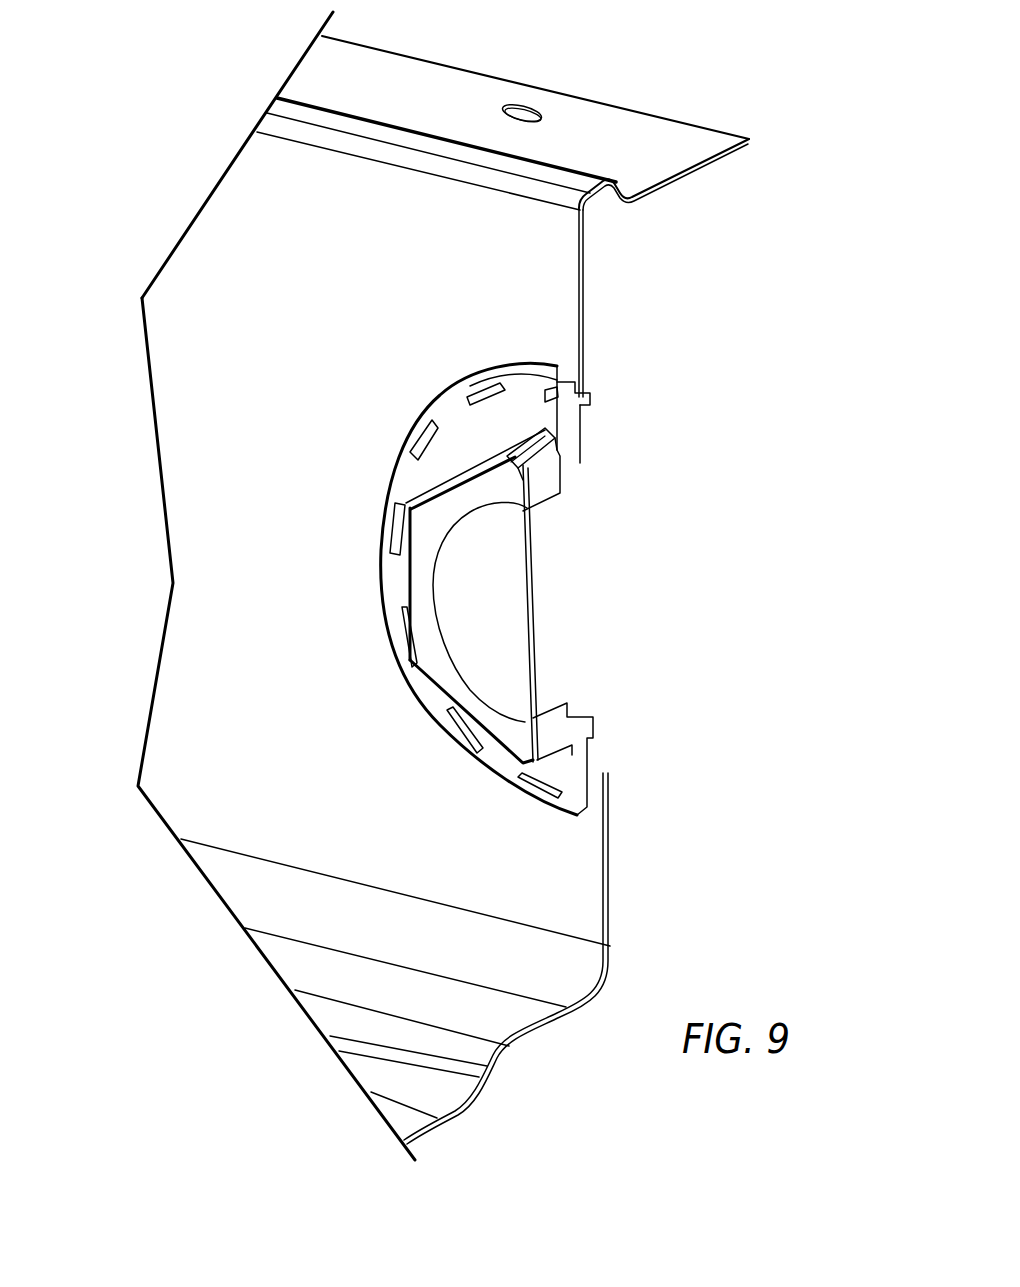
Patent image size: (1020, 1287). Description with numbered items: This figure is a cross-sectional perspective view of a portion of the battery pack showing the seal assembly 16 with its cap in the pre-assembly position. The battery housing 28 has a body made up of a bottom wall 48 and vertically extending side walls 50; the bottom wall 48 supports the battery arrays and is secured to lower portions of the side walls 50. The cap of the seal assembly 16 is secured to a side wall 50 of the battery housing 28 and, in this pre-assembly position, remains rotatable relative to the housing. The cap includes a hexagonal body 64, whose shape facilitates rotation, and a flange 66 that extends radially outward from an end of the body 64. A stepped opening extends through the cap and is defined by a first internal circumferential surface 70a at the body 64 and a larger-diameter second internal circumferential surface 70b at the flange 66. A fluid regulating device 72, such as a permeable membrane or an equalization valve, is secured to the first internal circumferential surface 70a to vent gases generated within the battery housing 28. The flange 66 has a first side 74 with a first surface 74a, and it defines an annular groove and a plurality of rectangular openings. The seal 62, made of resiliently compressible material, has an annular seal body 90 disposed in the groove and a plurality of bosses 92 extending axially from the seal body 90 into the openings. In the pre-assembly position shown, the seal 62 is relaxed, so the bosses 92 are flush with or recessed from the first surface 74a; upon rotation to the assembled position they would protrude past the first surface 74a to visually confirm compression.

The seal assembly 16 is at (620, 670).
The battery housing 28 is at (160, 160).
The bottom wall 48 is at (509, 1018).
The side wall 50 is at (210, 633).
The seal 62 is at (587, 396).
The body 64 is at (422, 562).
The flange 66 is at (424, 690).
The first internal circumferential surface 70a is at (550, 497).
The second internal circumferential surface 70b is at (577, 462).
The fluid regulating device 72 is at (502, 612).
The first side 74 is at (500, 765).
The first surface 74a is at (550, 413).
The annular seal body 90 is at (603, 783).
The boss 92 is at (397, 423).